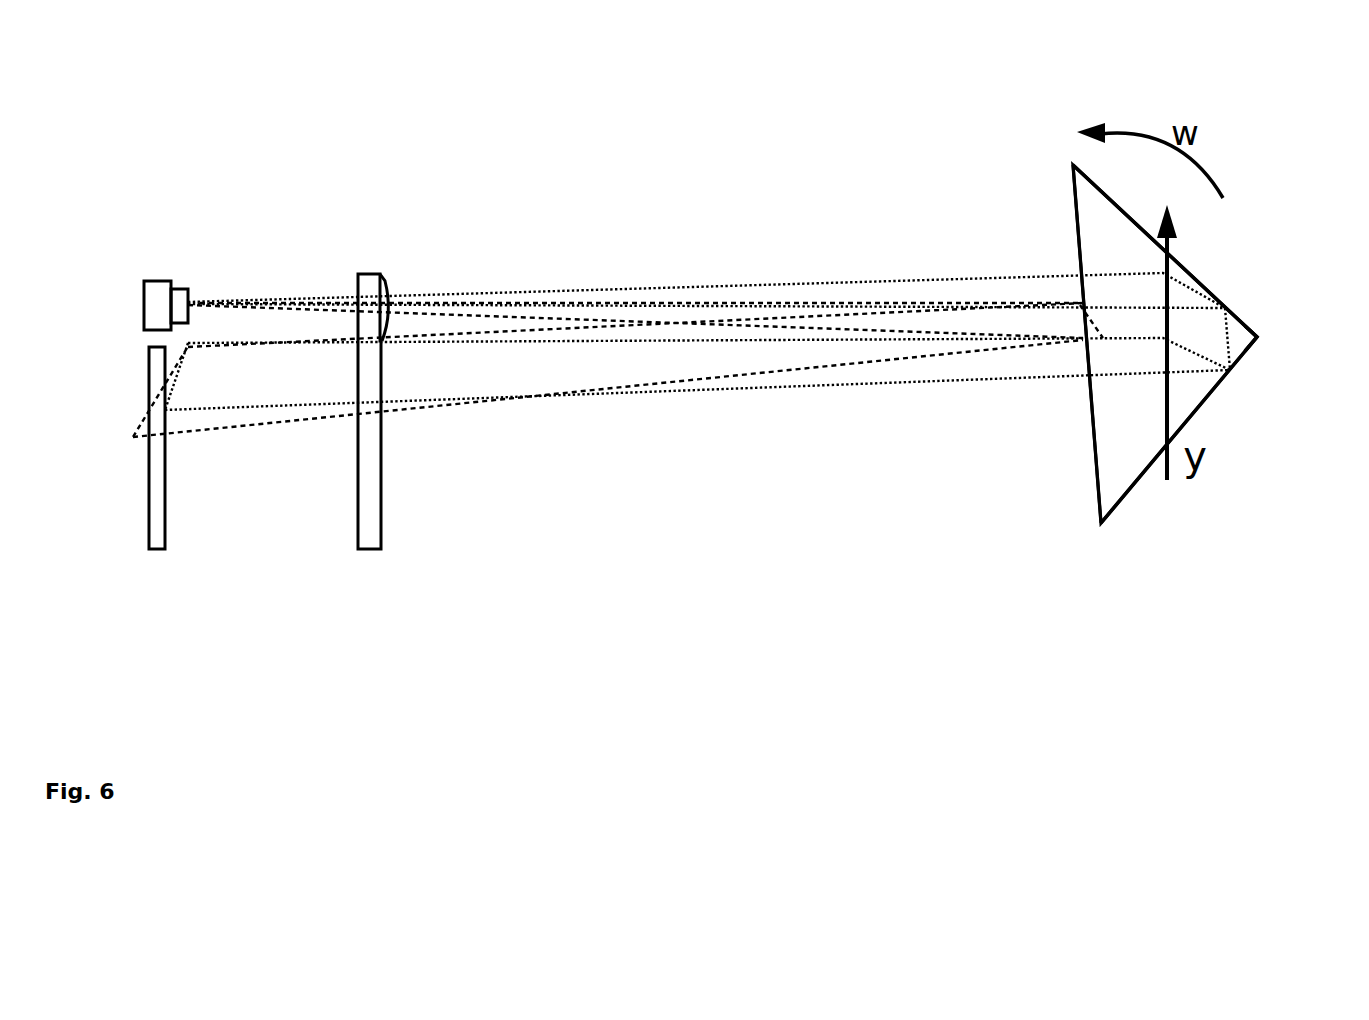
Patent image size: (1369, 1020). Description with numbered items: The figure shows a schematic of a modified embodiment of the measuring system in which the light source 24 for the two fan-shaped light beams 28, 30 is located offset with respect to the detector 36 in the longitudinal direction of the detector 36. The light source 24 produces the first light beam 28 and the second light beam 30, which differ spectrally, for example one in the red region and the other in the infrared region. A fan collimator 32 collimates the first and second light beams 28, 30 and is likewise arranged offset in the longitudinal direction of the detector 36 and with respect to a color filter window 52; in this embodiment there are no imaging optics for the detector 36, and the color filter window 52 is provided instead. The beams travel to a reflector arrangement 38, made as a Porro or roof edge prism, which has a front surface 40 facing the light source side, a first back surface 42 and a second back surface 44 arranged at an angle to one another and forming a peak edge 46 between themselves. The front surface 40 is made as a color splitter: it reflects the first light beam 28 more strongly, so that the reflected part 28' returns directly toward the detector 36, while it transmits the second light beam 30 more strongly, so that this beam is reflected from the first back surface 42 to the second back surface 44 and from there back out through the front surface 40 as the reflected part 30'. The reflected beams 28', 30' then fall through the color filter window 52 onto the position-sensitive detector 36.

The light source 24 is at (162, 290).
The collimator 32 is at (368, 283).
The color filter window 52 is at (363, 463).
The position-sensitive optical detector 36 is at (153, 470).
The first light beam 28 is at (706, 219).
The second light beam 30 is at (697, 255).
The reflected part of the first light beam 28' is at (608, 420).
The reflected part of the second light beam 30' is at (645, 402).
The reflector arrangement 38 is at (1080, 500).
The front surface 40 is at (1090, 432).
The first back surface 42 is at (1238, 318).
The second back surface 44 is at (1215, 392).
The peak edge 46 is at (1255, 337).